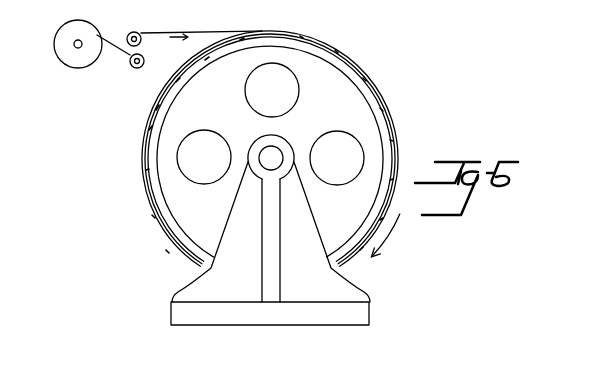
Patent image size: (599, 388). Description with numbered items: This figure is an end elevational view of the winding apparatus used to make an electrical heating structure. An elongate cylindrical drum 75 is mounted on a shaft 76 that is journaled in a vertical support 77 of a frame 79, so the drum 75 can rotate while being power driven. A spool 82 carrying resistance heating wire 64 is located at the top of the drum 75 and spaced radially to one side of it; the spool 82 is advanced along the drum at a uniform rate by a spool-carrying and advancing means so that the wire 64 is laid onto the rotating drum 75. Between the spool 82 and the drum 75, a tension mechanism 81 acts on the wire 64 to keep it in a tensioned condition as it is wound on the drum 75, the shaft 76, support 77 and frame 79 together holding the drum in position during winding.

The resistance heating wire 64 is at (172, 32).
The elongate cylindrical drum 75 is at (372, 99).
The shaft 76 is at (318, 121).
The vertical support 77 is at (267, 193).
The frame 79 is at (258, 314).
The tension mechanism 81 is at (135, 70).
The spool 82 is at (80, 61).